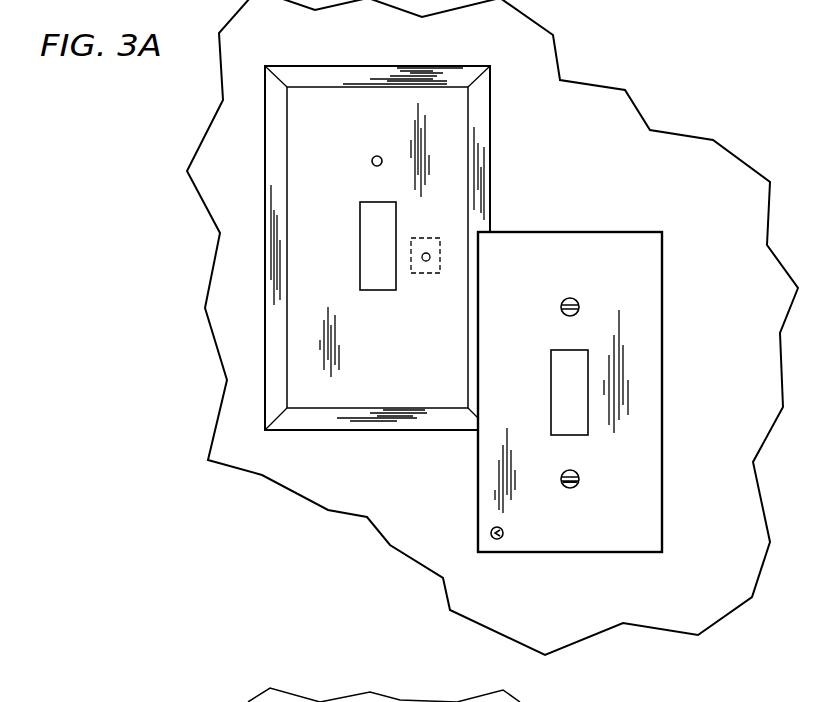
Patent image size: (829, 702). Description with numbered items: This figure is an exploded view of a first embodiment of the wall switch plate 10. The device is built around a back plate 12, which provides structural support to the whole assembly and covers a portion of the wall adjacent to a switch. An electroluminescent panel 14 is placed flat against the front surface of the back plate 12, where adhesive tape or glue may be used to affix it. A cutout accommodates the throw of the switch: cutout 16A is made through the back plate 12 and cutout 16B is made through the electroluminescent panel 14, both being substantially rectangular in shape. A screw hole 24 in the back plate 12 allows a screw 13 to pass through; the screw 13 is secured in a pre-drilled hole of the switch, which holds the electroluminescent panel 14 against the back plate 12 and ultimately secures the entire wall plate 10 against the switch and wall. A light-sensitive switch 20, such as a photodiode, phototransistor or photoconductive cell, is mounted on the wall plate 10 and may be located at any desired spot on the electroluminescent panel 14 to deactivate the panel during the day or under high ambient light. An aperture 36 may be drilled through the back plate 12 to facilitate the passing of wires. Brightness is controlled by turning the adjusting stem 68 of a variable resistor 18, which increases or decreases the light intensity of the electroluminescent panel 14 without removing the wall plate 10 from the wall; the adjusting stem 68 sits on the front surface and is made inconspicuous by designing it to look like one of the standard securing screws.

The switch plate 10 is at (551, 160).
The back plate 12 is at (381, 431).
The screw 13 is at (566, 298).
The electroluminescent panel 14 is at (662, 362).
The cutout 16A is at (377, 237).
The cutout 16B is at (567, 375).
The variable resistor 18 is at (575, 486).
The light-sensitive switch 20 is at (506, 539).
The screw hole 24 is at (373, 157).
The aperture 36 is at (426, 261).
The adjusting stem 68 is at (566, 487).